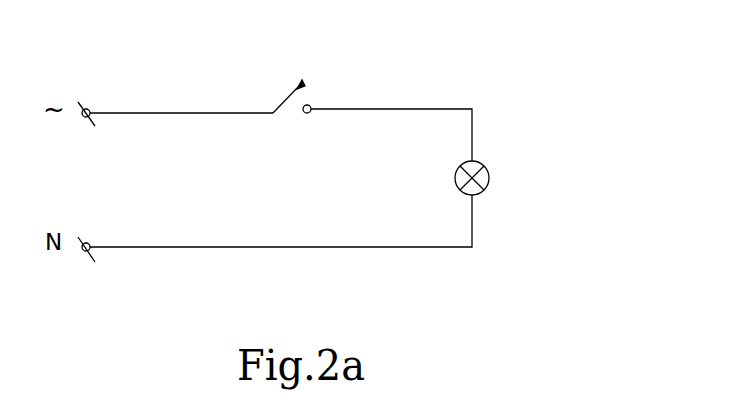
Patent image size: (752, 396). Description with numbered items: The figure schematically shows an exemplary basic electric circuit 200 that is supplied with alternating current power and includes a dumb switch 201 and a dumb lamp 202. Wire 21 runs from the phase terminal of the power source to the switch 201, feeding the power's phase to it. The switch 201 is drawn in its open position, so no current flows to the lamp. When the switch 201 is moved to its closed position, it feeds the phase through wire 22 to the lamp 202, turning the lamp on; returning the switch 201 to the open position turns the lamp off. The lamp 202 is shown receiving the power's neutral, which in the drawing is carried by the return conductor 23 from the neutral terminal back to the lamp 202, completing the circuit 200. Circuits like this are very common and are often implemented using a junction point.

The basic electric circuit 200 is at (548, 75).
The dumb switch 201 is at (297, 87).
The dumb lamp 202 is at (492, 177).
The wire 21 is at (184, 112).
The wire 22 is at (397, 108).
The neutral conductor 23 is at (280, 247).